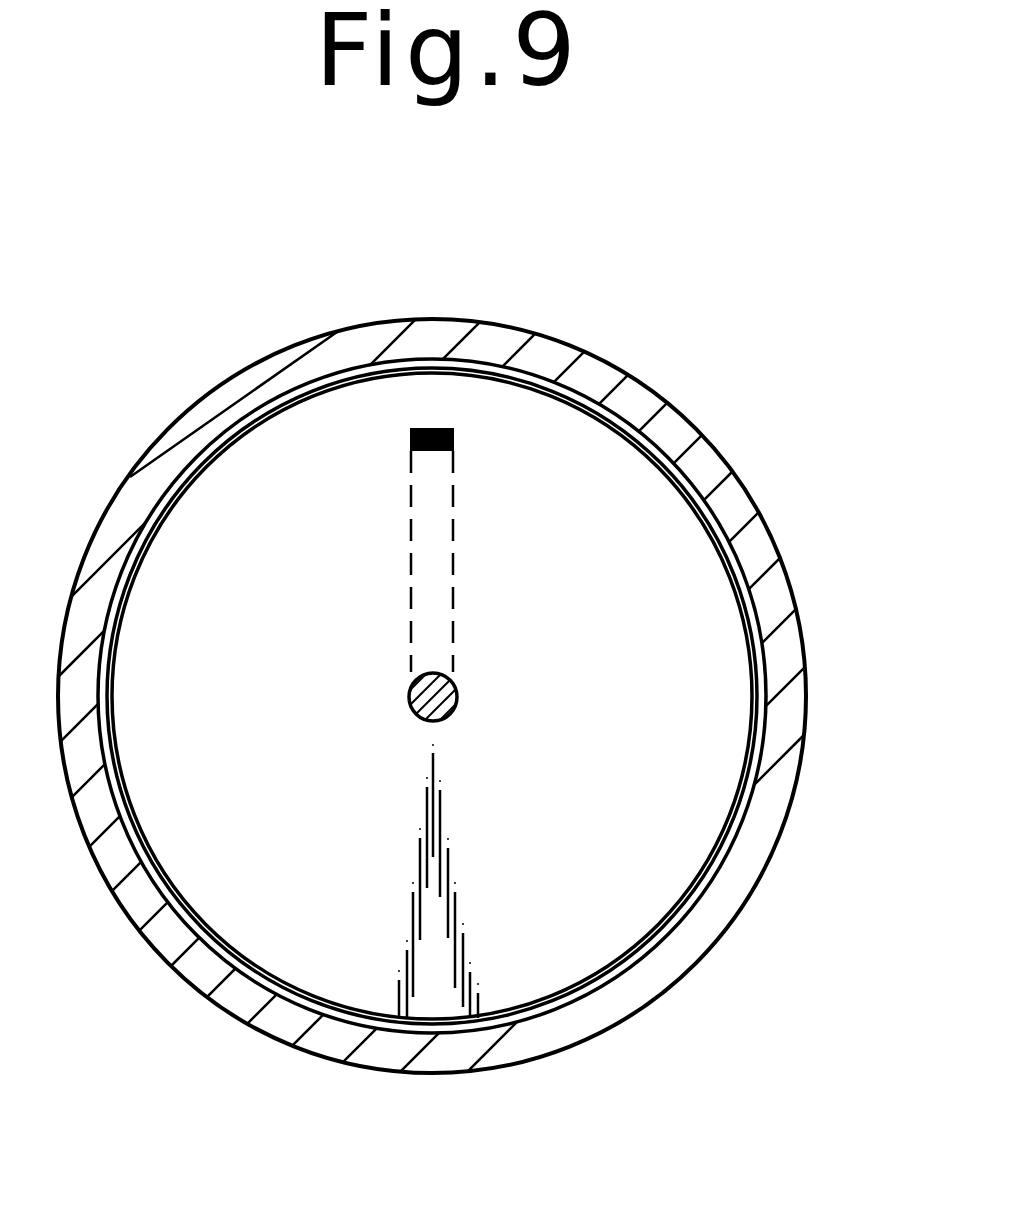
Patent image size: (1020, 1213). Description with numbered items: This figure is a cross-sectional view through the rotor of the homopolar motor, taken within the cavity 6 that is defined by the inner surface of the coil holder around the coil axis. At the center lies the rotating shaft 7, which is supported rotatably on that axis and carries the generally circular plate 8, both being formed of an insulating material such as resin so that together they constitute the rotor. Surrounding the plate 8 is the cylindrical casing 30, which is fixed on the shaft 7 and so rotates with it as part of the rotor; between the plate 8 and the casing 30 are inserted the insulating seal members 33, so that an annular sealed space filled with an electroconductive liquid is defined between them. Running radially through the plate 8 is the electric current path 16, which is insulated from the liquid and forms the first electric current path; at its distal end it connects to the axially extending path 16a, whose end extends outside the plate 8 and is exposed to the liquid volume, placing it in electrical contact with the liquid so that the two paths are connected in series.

The cavity 6 is at (843, 874).
The rotating shaft 7 is at (445, 700).
The plate 8 is at (727, 728).
The electric current path 16 is at (455, 528).
The axially extending path 16a is at (454, 436).
The cylindrical casing 30 is at (760, 549).
The seal members 33 is at (753, 625).